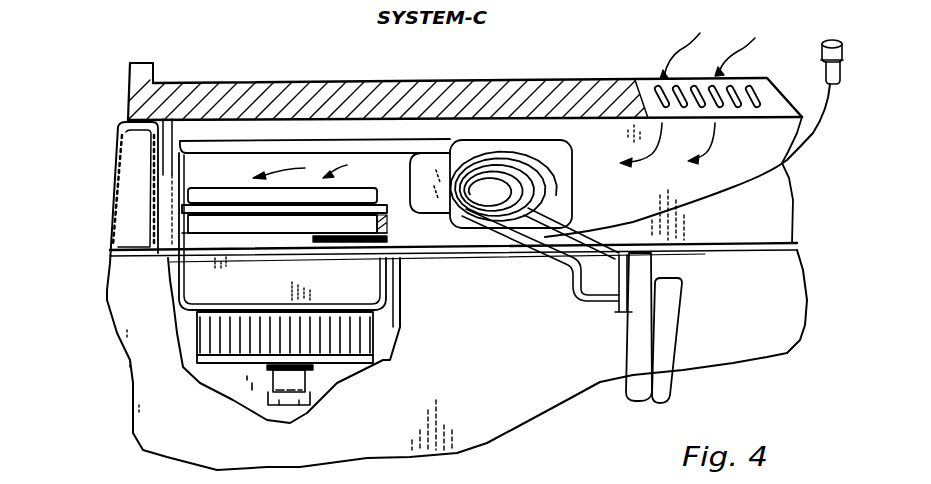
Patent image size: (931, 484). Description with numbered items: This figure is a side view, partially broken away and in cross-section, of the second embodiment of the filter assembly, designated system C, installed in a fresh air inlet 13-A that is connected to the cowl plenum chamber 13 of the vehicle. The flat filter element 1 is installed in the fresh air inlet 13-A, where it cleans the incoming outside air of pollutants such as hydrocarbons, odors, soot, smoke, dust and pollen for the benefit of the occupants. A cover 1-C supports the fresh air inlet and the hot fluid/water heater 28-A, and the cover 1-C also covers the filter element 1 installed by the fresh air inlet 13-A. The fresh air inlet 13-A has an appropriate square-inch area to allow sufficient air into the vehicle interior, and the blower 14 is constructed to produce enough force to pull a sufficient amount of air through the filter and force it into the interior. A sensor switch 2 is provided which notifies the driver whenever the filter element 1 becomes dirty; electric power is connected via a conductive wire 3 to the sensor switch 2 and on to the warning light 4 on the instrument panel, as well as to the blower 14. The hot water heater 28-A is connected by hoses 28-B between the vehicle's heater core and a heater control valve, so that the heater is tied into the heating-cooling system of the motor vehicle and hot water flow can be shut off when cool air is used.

The filter element 1 is at (203, 187).
The cover 1-C is at (185, 187).
The sensor switch 2 is at (330, 257).
The conductive wire 3 is at (400, 323).
The warning light 4 is at (842, 70).
The cowl plenum chamber 13 is at (166, 283).
The fresh air inlet 13-A is at (195, 228).
The blower 14 is at (250, 383).
The hot water heater 28-A is at (541, 262).
The hoses 28-B is at (678, 362).